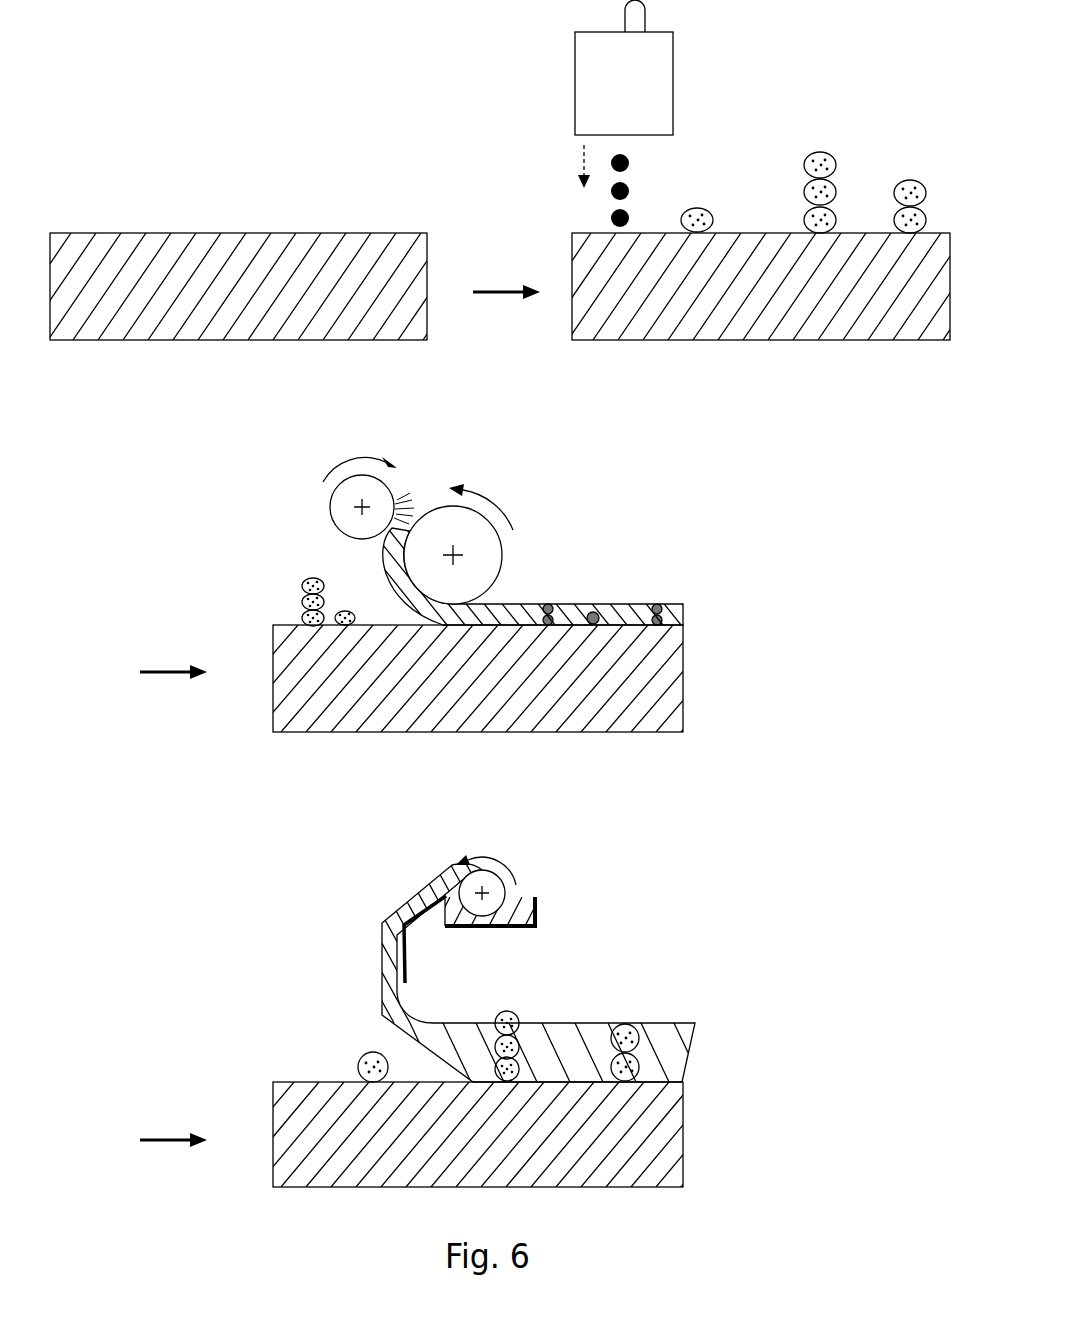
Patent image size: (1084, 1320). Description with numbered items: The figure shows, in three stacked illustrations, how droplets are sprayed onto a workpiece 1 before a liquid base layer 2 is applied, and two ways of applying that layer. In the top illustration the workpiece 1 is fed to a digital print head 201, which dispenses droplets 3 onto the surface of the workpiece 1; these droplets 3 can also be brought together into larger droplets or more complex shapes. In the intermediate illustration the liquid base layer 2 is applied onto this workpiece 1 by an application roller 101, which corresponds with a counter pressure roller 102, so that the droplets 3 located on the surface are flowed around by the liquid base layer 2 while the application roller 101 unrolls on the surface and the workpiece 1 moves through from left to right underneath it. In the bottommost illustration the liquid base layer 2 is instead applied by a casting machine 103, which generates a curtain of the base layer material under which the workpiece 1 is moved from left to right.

The workpiece 1 is at (228, 250).
The liquid base layer 2 is at (530, 605).
The droplets 3 is at (697, 208).
The application roller 101 is at (503, 548).
The counter pressure roller 102 is at (329, 500).
The casting machine 103 is at (512, 856).
The digital print head 201 is at (602, 57).